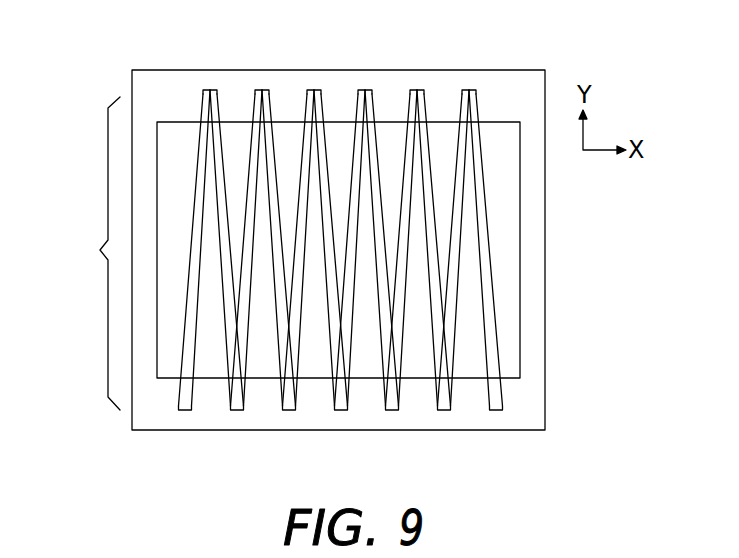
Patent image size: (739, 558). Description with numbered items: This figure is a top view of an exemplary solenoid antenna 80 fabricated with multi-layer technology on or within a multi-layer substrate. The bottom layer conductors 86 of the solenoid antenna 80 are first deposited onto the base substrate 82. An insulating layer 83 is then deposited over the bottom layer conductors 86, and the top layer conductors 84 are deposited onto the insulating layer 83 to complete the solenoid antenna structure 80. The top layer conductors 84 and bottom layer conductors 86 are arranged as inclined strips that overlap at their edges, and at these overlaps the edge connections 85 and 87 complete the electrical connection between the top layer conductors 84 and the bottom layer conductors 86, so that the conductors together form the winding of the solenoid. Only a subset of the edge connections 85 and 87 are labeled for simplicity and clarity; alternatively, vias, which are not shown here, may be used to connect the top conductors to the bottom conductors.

The solenoid antenna 80 is at (92, 253).
The base substrate 82 is at (547, 381).
The insulating layer 83 is at (522, 279).
The top layer conductors 84 is at (221, 103).
The edge connections 85 is at (205, 92).
The bottom layer conductors 86 is at (193, 398).
The edge connections 87 is at (186, 410).